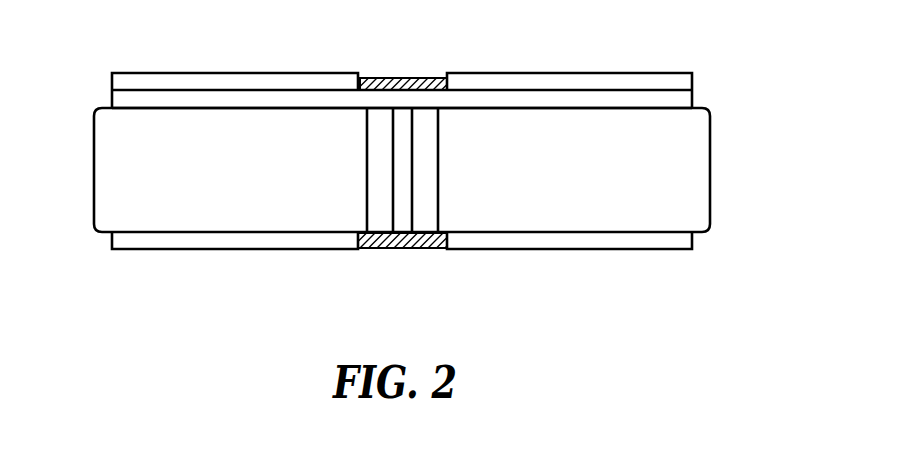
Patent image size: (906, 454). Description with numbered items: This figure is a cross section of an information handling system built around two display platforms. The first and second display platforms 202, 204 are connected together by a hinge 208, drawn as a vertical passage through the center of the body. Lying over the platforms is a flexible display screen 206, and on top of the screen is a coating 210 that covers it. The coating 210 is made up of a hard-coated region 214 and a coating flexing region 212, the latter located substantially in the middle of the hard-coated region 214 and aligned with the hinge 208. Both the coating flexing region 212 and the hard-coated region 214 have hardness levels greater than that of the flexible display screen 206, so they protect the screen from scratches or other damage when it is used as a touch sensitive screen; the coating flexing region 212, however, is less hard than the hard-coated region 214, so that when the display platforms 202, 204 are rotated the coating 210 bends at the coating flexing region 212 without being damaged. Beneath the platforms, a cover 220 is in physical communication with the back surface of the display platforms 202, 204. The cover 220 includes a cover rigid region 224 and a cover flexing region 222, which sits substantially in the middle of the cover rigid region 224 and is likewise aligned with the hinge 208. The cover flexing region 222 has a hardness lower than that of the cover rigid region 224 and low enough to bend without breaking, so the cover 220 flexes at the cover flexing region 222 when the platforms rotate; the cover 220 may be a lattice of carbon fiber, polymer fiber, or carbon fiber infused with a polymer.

The first display platform 202 is at (157, 141).
The second display platform 204 is at (682, 144).
The flexible display screen 206 is at (683, 99).
The hinge 208 is at (400, 220).
The coating 210 is at (414, 67).
The coating flexing region 212 is at (404, 78).
The hard-coated region 214 is at (200, 82).
The cover 220 is at (362, 277).
The cover flexing region 222 is at (403, 248).
The cover rigid region 224 is at (205, 241).